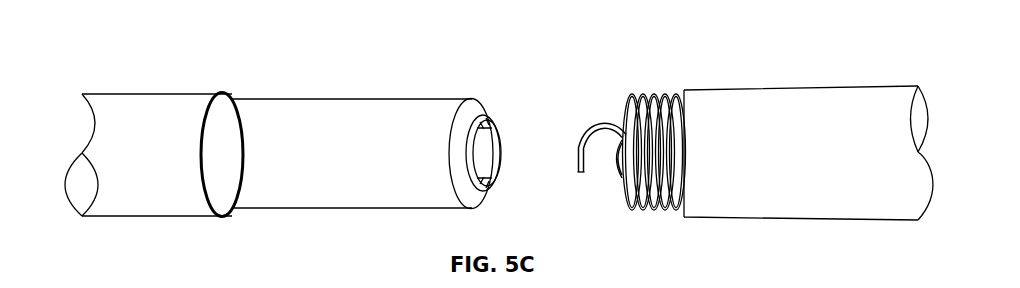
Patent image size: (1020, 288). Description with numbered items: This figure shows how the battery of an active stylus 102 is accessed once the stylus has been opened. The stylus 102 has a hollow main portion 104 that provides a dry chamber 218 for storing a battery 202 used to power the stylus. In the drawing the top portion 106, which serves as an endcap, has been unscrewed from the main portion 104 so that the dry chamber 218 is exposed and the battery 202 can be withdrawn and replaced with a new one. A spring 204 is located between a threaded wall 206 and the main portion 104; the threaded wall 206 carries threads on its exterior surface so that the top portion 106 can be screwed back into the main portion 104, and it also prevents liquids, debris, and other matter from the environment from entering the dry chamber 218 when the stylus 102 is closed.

The stylus 102 is at (90, 133).
The main portion 104 is at (124, 120).
The battery 202 is at (365, 98).
The dry chamber 218 is at (238, 212).
The spring 204 is at (605, 127).
The threaded wall 206 is at (655, 92).
The top portion 106 is at (828, 88).